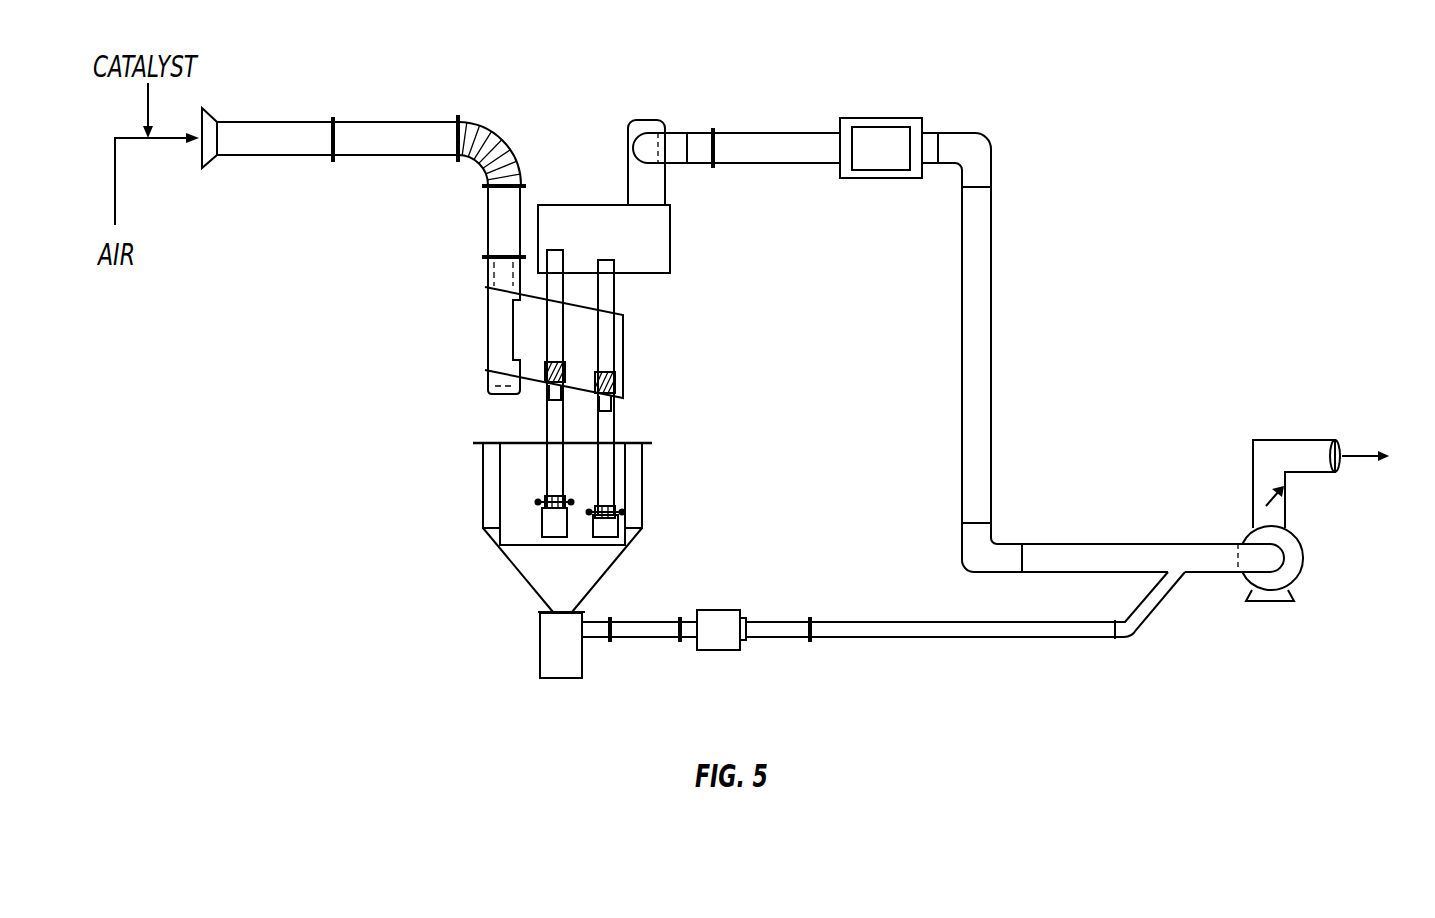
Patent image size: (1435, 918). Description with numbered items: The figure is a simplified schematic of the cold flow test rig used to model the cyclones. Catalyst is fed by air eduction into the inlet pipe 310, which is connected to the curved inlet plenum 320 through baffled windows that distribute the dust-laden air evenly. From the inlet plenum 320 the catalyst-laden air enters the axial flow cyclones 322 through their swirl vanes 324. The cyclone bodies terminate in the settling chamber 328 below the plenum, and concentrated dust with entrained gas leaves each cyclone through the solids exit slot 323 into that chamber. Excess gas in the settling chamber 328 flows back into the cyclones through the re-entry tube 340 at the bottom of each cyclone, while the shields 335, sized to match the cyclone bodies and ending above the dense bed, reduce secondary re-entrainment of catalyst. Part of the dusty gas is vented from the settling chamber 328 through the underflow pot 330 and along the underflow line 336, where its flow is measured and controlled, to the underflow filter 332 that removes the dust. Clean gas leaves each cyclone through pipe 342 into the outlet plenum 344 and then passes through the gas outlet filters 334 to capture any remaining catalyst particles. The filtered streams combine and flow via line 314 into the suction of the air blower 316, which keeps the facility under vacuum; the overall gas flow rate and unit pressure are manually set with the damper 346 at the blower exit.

The inlet pipe 310 is at (393, 122).
The outlet gas filter exhaust 314 is at (983, 387).
The air blower 316 is at (1303, 565).
The inlet plenum 320 is at (625, 320).
The axial flow cyclones 322 is at (617, 428).
The solids exit slot 323 is at (607, 502).
The swirl vanes 324 is at (613, 373).
The settling chamber 328 is at (522, 530).
The underflow pot 330 is at (555, 650).
The underflow filter 332 is at (720, 609).
The gas outlet filters 334 is at (880, 117).
The shields 335 is at (605, 528).
The underflow line 336 is at (775, 637).
The re-entry tube 340 is at (547, 493).
The pipe 342 is at (615, 397).
The outlet plenum 344 is at (627, 254).
The damper 346 is at (1278, 497).